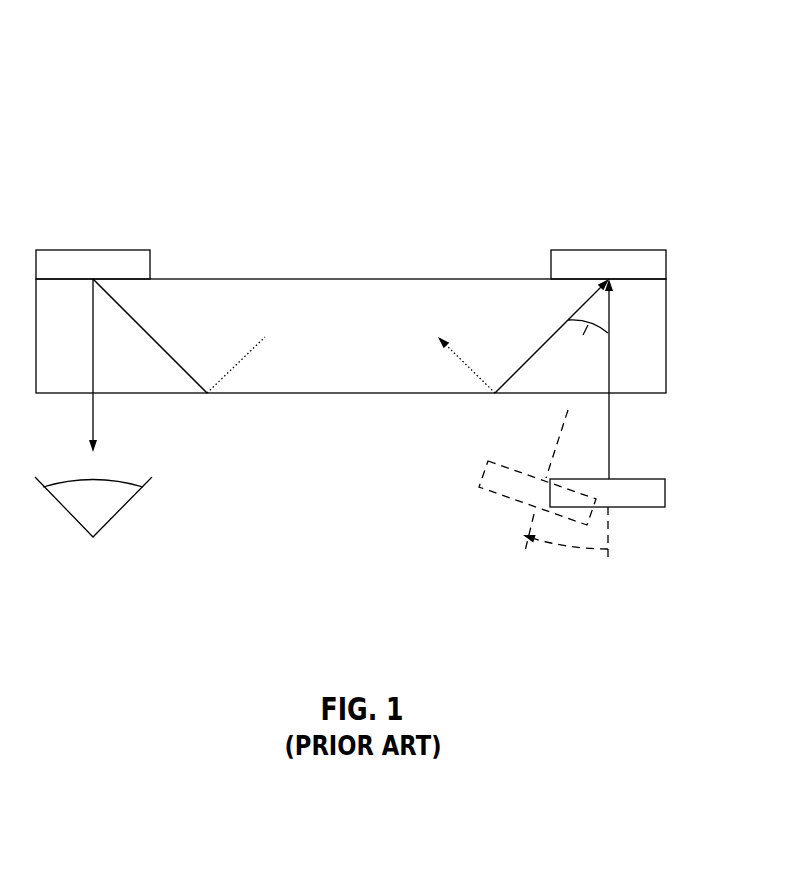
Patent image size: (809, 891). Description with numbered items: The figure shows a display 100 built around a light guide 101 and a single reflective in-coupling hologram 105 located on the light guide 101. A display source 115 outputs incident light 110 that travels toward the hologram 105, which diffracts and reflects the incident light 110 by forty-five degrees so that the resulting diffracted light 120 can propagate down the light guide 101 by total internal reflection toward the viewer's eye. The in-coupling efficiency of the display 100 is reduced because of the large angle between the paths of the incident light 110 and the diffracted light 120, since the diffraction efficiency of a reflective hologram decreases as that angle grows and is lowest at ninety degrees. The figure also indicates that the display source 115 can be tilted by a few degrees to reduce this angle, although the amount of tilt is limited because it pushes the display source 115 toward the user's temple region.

The display 100 is at (80, 57).
The light guide 101 is at (339, 348).
The reflective in-coupling hologram 105 is at (596, 272).
The incident light 110 is at (609, 368).
The display source 115 is at (596, 503).
The diffracted light 120 is at (545, 340).